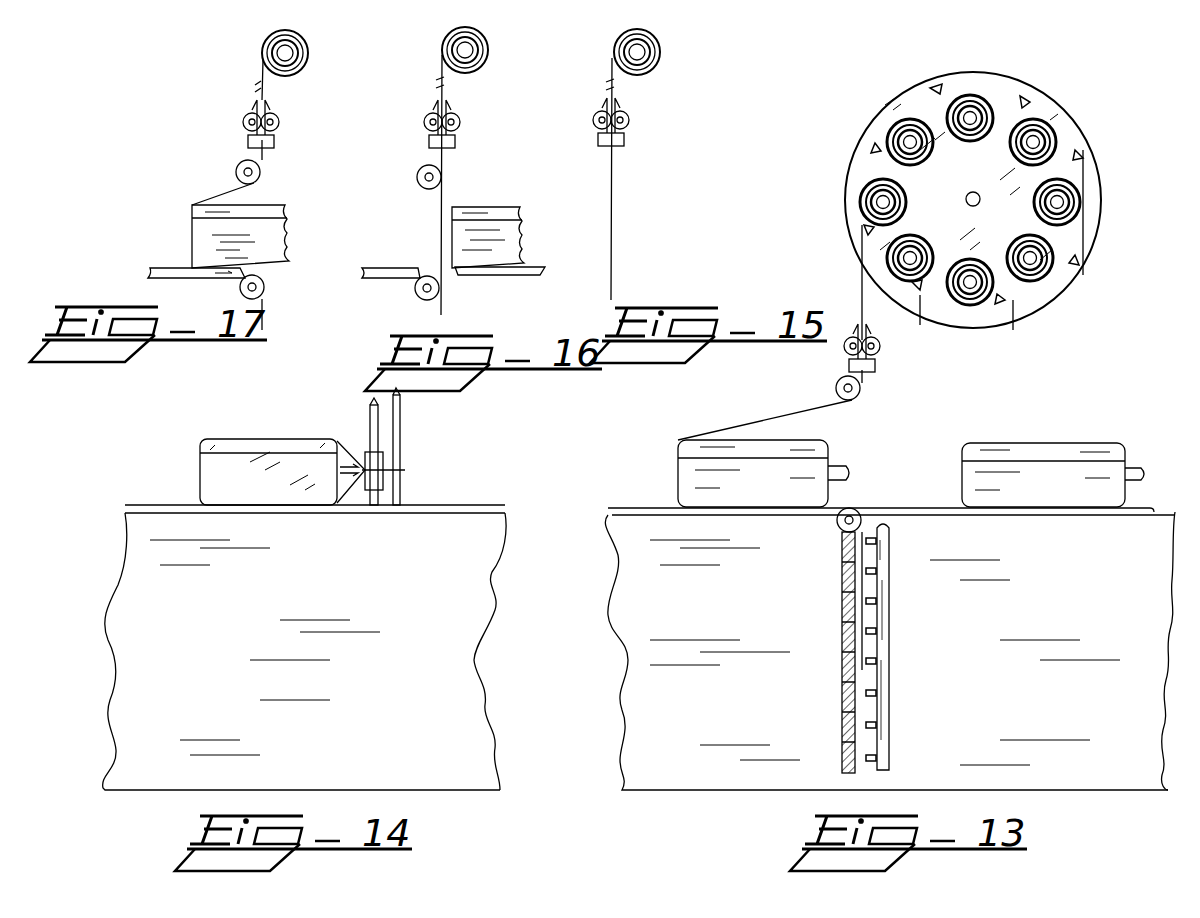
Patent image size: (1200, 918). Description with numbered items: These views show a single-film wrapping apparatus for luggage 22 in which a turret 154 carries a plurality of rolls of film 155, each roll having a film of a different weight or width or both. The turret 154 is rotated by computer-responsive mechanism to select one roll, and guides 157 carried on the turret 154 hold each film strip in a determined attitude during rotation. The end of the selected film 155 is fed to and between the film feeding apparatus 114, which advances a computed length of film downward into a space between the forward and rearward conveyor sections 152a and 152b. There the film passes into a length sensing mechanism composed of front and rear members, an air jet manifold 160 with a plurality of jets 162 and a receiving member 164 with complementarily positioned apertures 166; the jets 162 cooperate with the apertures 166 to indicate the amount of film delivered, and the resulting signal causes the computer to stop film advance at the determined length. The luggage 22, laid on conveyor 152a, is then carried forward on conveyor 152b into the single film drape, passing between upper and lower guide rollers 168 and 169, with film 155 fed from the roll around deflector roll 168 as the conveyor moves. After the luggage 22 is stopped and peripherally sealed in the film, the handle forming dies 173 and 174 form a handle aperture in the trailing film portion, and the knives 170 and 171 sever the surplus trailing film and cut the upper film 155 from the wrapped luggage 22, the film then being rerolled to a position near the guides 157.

In FIG. 17, the luggage 22 is at (300, 195).
In FIG. 16, the luggage 22 is at (512, 205).
In FIG. 14, the luggage 22 is at (282, 472).
In FIG. 13, the luggage 22 is at (818, 447).
In FIG. 17, the film feeding apparatus 114 is at (261, 124).
In FIG. 16, the film feeding apparatus 114 is at (442, 124).
In FIG. 15, the film feeding apparatus 114 is at (640, 120).
In FIG. 13, the film feeding apparatus 114 is at (876, 364).
In FIG. 13, the forward conveyor section 152a is at (1130, 515).
In FIG. 17, the rearward conveyor section 152b is at (142, 248).
In FIG. 13, the rearward conveyor section 152b is at (650, 512).
In FIG. 13, the turret 154 is at (1068, 118).
In FIG. 17, the rolls of film 155 is at (285, 53).
In FIG. 16, the rolls of film 155 is at (465, 50).
In FIG. 15, the rolls of film 155 is at (655, 40).
In FIG. 13, the rolls of film 155 is at (985, 105).
In FIG. 13, the guides 157 is at (938, 88).
In FIG. 13, the air jet manifold 160 is at (887, 598).
In FIG. 13, the jets 162 is at (873, 655).
In FIG. 13, the receiving member 164 is at (840, 595).
In FIG. 13, the apertures 166 is at (842, 688).
In FIG. 17, the deflector roll 168 is at (258, 166).
In FIG. 16, the deflector roll 168 is at (429, 177).
In FIG. 13, the deflector roll 168 is at (858, 396).
In FIG. 17, the lower guide roller 169 is at (262, 292).
In FIG. 16, the lower guide roller 169 is at (427, 288).
In FIG. 13, the lower guide roller 169 is at (855, 510).
In FIG. 14, the knife 170 is at (398, 425).
In FIG. 14, the knife 171 is at (402, 488).
In FIG. 14, the upper die 173 is at (370, 440).
In FIG. 14, the lower die 174 is at (370, 490).